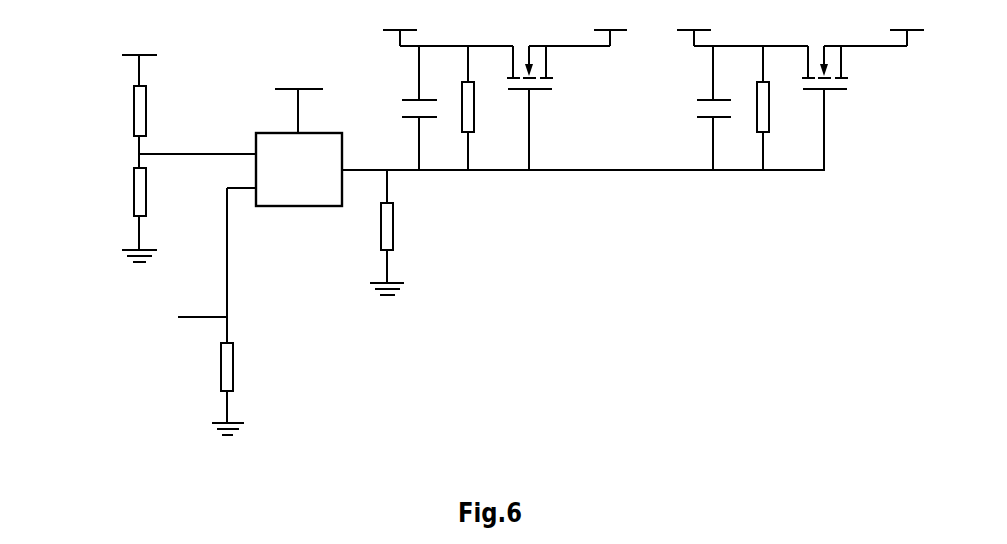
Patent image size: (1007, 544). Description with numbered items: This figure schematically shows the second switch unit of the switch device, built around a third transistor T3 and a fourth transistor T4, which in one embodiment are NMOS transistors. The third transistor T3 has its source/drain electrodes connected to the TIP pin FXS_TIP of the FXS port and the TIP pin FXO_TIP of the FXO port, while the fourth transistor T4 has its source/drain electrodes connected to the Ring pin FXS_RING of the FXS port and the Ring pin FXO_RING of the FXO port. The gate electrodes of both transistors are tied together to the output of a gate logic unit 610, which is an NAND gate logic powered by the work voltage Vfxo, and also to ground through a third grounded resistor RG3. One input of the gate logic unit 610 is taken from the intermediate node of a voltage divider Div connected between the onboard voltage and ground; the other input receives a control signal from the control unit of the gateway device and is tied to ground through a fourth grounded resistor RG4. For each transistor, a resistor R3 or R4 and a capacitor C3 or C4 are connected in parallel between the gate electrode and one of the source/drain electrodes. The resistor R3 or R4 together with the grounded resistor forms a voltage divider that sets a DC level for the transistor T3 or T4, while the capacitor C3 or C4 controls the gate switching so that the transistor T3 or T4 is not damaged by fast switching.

The gate logic unit 610 is at (310, 207).
The voltage divider Div is at (124, 154).
The third grounded resistor RG3 is at (397, 245).
The fourth grounded resistor RG4 is at (149, 326).
The capacitor C3 is at (403, 108).
The resistor R3 is at (482, 108).
The third transistor T3 is at (544, 108).
The capacitor C4 is at (700, 108).
The resistor R4 is at (778, 108).
The fourth transistor T4 is at (838, 108).